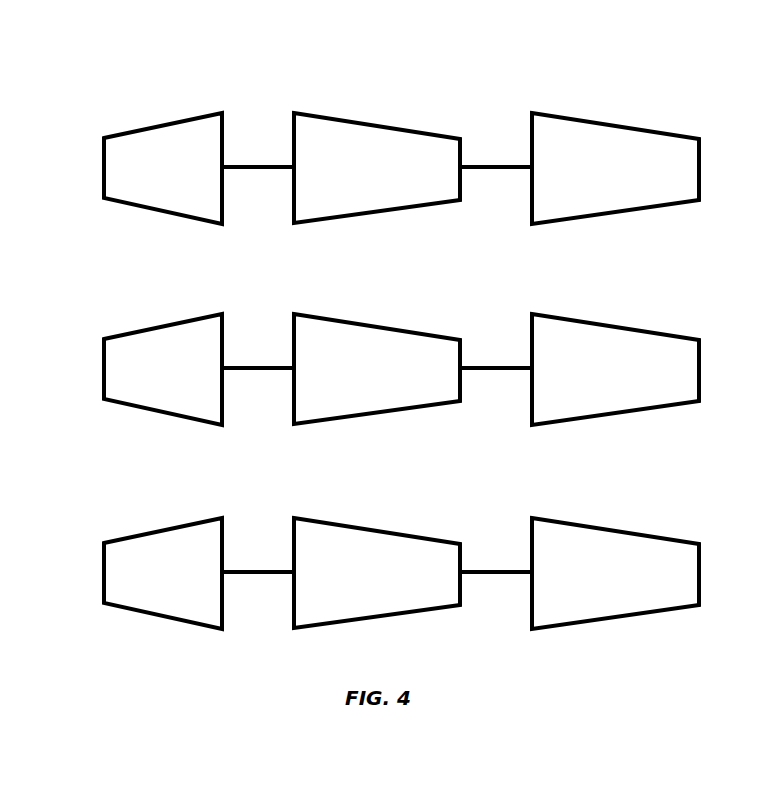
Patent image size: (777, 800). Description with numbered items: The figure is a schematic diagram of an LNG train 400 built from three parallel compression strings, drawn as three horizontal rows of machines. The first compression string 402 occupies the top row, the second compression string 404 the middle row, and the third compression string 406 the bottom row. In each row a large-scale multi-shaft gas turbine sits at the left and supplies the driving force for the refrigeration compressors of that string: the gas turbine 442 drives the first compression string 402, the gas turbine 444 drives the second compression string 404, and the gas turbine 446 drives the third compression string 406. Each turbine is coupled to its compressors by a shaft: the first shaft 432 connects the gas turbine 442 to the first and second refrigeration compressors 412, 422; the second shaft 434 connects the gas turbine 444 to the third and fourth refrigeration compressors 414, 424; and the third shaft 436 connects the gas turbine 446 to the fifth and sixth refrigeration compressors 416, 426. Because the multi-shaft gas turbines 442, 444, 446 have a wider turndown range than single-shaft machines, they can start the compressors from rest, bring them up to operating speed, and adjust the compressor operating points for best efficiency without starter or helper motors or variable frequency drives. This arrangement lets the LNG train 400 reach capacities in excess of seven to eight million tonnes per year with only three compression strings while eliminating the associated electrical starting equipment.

The LNG train 400 is at (615, 33).
The first compression string 402 is at (85, 106).
The second compression string 404 is at (369, 340).
The third compression string 406 is at (369, 543).
The large-scale multi-shaft gas turbine 442 is at (162, 123).
The large-scale multi-shaft gas turbine 444 is at (163, 353).
The large-scale multi-shaft gas turbine 446 is at (163, 556).
The first shaft 432 is at (262, 165).
The second shaft 434 is at (258, 340).
The third shaft 436 is at (258, 544).
The first refrigeration compressor 412 is at (373, 123).
The third refrigeration compressor 414 is at (377, 353).
The fifth refrigeration compressor 416 is at (377, 557).
The second refrigeration compressor 422 is at (612, 123).
The fourth refrigeration compressor 424 is at (615, 353).
The sixth refrigeration compressor 426 is at (615, 557).